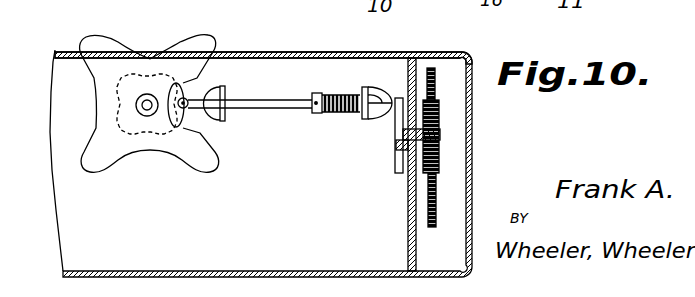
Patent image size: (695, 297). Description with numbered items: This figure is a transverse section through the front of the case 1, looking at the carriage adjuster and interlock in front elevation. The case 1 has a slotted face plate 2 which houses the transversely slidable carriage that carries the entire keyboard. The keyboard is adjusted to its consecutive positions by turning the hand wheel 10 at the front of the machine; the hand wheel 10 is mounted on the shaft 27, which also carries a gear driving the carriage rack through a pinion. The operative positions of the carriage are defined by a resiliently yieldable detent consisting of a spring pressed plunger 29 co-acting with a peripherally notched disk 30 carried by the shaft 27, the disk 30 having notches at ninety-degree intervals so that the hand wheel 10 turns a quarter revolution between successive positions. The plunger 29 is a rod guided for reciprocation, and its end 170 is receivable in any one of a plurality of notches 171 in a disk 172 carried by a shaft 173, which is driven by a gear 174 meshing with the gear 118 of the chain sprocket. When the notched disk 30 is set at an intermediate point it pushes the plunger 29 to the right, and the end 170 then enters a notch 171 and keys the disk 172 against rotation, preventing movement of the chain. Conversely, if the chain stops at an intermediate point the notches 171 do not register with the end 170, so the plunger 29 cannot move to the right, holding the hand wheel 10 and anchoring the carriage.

The case 1 is at (472, 160).
The slotted face plate 2 is at (295, 35).
The hand wheel 10 is at (96, 58).
The shaft 27 is at (140, 106).
The spring pressed plunger 29 is at (222, 120).
The peripherally notched disk 30 is at (188, 88).
The gear 118 is at (428, 205).
The end of plunger rod 170 is at (384, 100).
The notches 171 is at (392, 110).
The disk 172 is at (396, 150).
The shaft 173 is at (396, 170).
The gear 174 is at (440, 120).